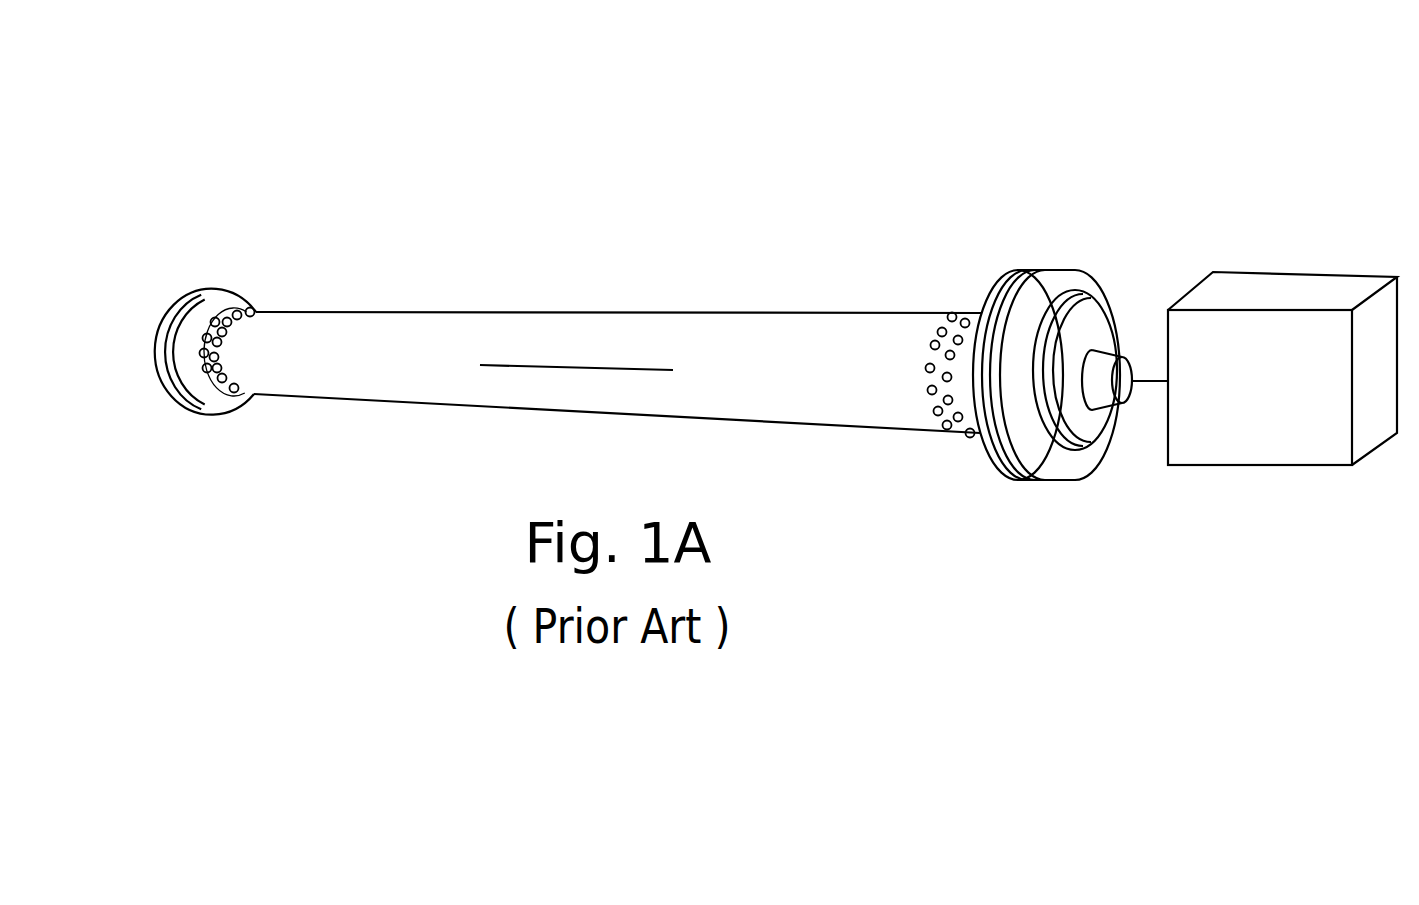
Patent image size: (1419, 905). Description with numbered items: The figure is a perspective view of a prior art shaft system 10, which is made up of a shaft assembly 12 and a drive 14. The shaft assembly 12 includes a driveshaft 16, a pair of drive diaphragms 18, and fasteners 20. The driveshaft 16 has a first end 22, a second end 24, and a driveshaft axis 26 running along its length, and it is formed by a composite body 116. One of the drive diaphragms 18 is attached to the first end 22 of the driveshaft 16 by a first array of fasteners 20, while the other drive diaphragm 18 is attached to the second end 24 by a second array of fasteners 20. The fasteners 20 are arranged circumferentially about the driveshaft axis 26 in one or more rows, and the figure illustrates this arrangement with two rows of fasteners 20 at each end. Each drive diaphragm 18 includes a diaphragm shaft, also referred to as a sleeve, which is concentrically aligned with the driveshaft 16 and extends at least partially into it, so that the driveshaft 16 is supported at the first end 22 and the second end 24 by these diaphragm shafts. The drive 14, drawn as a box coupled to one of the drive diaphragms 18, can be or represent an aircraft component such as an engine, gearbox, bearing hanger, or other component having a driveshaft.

The shaft system 10 is at (530, 148).
The shaft assembly 12 is at (990, 458).
The drive 14 is at (1260, 465).
The driveshaft 16 is at (783, 312).
The drive diaphragms 18 is at (170, 312).
The fasteners 20 is at (233, 392).
The first end 22 is at (970, 312).
The second end 24 is at (262, 311).
The driveshaft axis 26 is at (533, 365).
The composite body 116 is at (590, 337).